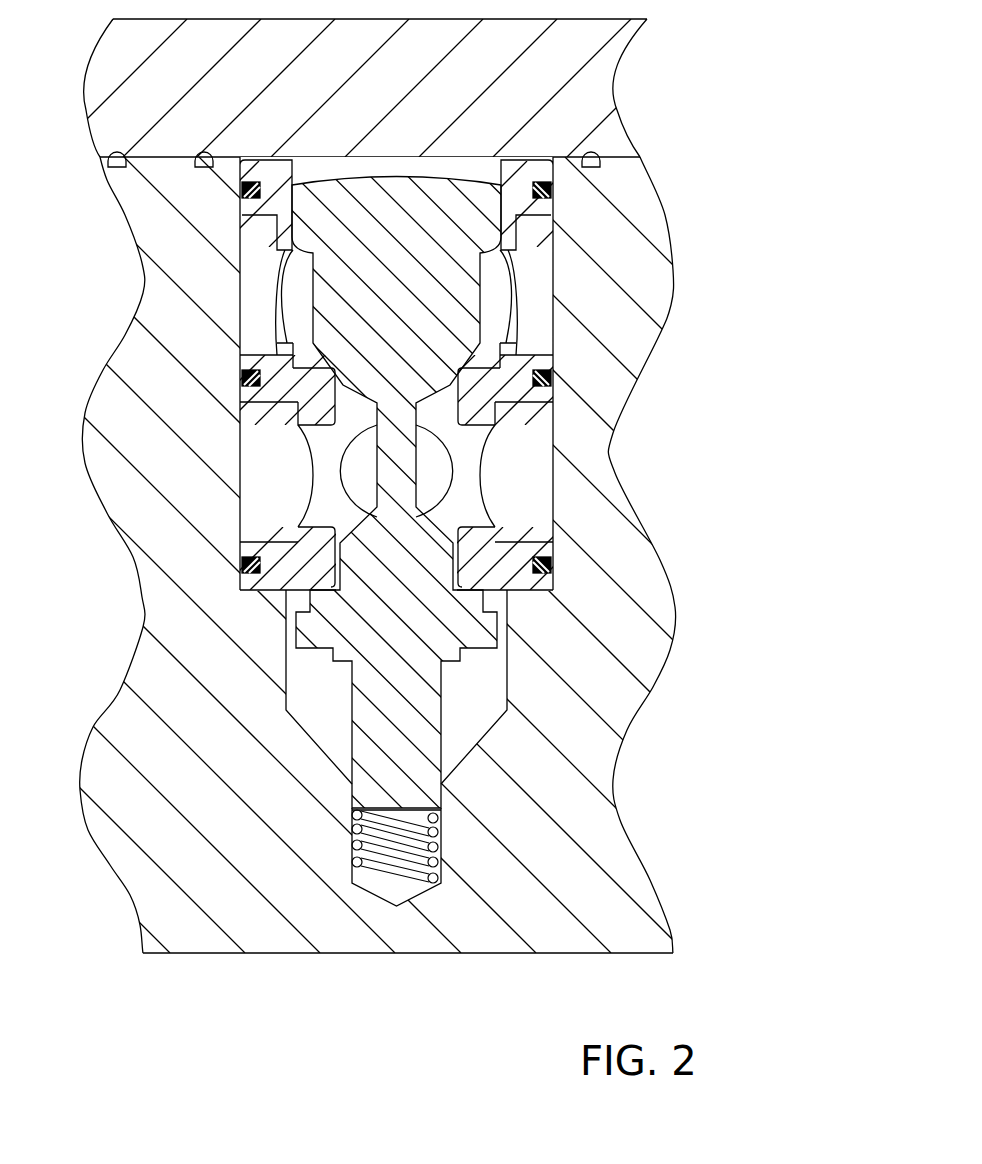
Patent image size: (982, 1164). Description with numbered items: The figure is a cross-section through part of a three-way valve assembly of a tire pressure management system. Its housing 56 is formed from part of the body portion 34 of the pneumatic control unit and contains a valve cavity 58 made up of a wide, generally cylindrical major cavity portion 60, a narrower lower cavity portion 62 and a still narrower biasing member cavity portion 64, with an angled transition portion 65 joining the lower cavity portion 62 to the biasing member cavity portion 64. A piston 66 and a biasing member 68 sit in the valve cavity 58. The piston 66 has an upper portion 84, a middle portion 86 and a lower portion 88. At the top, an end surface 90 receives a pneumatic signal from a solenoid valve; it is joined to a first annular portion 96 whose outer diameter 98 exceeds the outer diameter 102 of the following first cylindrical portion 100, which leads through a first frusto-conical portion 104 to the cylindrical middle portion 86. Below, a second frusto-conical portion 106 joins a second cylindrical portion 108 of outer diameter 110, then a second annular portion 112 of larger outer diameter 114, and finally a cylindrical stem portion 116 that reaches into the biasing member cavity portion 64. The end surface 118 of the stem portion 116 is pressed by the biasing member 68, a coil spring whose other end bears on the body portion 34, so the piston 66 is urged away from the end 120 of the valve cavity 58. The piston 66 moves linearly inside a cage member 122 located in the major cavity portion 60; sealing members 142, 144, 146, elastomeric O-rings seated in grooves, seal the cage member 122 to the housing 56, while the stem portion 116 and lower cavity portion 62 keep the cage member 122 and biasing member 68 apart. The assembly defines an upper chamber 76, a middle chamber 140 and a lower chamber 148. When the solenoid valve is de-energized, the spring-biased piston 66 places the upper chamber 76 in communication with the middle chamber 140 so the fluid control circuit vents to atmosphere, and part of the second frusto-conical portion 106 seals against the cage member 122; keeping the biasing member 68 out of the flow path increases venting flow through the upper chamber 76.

The body portion 34 is at (123, 890).
The housing 56 is at (500, 760).
The valve cavity 58 is at (317, 747).
The major cavity portion 60 is at (553, 320).
The lower cavity portion 62 is at (283, 660).
The biasing member cavity portion 64 is at (480, 905).
The angled transition portion 65 is at (490, 732).
The piston 66 is at (310, 348).
The biasing member 68 is at (433, 847).
The upper chamber 76 is at (490, 264).
The upper portion 84 is at (357, 297).
The middle portion 86 is at (397, 445).
The lower portion 88 is at (490, 628).
The end surface 90 is at (108, 161).
The first annular portion 96 is at (468, 194).
The outer diameter 98 is at (518, 216).
The first cylindrical portion 100 is at (427, 275).
The outer diameter 102 is at (493, 300).
The first frusto-conical portion 104 is at (440, 415).
The second frusto-conical portion 106 is at (537, 477).
The second cylindrical portion 108 is at (465, 545).
The outer diameter 110 is at (475, 580).
The second annular portion 112 is at (460, 647).
The outer diameter 114 is at (505, 652).
The stem portion 116 is at (410, 787).
The end surface 118 is at (347, 828).
The end 120 is at (373, 897).
The cage member 122 is at (280, 572).
The middle chamber 140 is at (413, 522).
The sealing member 142 is at (553, 187).
The sealing member 144 is at (556, 378).
The sealing member 146 is at (553, 567).
The lower chamber 148 is at (498, 675).